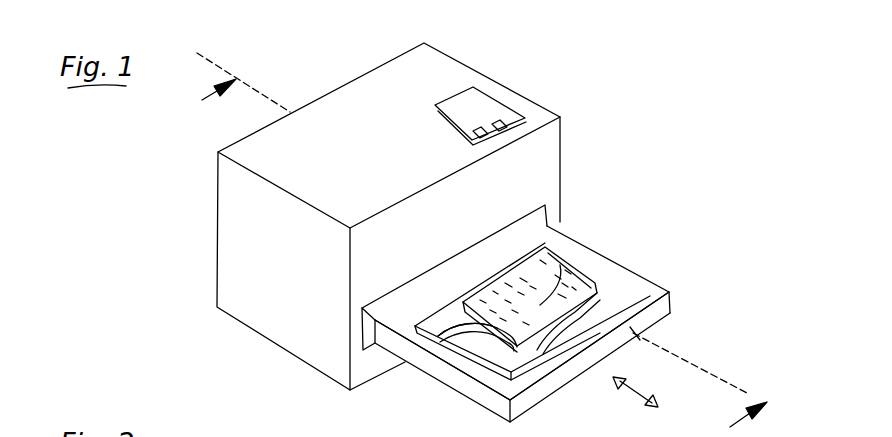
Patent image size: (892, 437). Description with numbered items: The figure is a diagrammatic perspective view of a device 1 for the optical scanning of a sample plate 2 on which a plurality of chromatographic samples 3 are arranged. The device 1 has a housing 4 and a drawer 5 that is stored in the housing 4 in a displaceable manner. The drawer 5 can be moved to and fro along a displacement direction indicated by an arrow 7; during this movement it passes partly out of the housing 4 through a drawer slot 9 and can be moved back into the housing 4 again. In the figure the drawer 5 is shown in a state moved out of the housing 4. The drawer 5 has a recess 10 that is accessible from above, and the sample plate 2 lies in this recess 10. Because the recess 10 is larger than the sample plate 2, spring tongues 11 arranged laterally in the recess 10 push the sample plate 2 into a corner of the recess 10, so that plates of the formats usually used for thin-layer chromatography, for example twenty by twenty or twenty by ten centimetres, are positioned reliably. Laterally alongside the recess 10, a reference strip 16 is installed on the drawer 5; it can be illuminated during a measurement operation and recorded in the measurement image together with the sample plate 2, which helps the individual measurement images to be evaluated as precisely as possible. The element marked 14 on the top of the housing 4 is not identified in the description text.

The device 1 is at (474, 226).
The sample plate 2 is at (568, 272).
The chromatographic samples 3 is at (539, 284).
The housing 4 is at (265, 307).
The drawer 5 is at (562, 324).
The arrow 7 is at (640, 384).
The drawer slot 9 is at (512, 230).
The recess 10 is at (614, 294).
The spring tongues 11 is at (480, 334).
The control panel 14 is at (478, 108).
The reference strip 16 is at (448, 335).